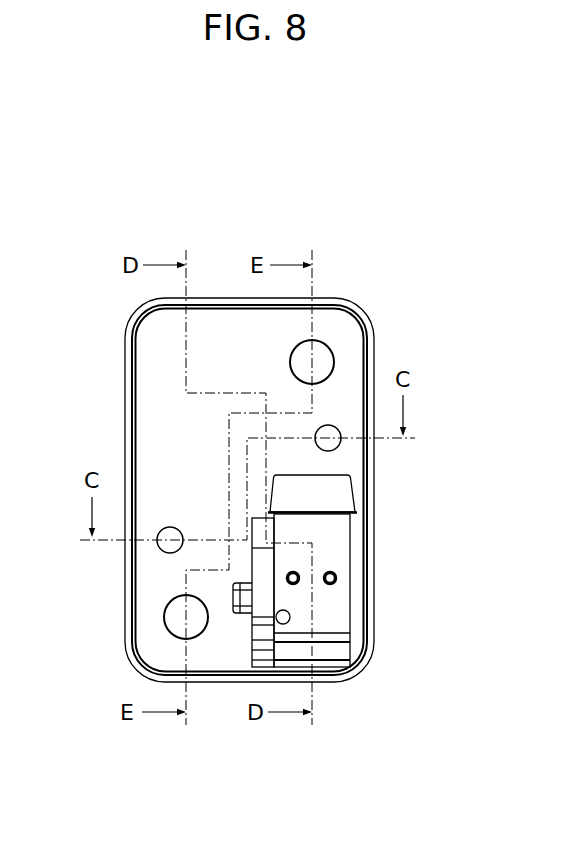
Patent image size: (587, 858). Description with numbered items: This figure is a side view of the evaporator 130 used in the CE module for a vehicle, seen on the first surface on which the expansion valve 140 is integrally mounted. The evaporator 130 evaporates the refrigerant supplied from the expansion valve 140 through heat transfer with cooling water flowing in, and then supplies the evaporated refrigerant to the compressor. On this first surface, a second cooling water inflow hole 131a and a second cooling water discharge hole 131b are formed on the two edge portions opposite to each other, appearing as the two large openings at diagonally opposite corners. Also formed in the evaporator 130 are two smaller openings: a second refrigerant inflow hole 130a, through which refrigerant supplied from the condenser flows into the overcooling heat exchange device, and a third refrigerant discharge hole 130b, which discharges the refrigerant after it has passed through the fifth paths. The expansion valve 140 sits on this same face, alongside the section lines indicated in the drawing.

The evaporator 130 is at (383, 280).
The second refrigerant inflow hole 130a is at (335, 446).
The third refrigerant discharge hole 130b is at (165, 552).
The second cooling water inflow hole 131a is at (170, 630).
The second cooling water discharge hole 131b is at (326, 352).
The expansion valve 140 is at (337, 554).